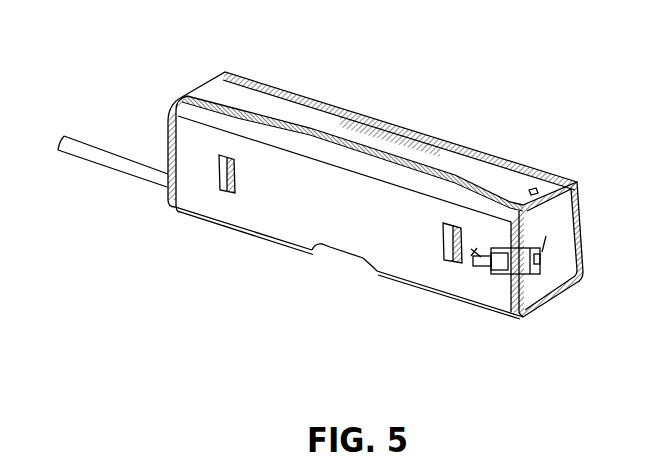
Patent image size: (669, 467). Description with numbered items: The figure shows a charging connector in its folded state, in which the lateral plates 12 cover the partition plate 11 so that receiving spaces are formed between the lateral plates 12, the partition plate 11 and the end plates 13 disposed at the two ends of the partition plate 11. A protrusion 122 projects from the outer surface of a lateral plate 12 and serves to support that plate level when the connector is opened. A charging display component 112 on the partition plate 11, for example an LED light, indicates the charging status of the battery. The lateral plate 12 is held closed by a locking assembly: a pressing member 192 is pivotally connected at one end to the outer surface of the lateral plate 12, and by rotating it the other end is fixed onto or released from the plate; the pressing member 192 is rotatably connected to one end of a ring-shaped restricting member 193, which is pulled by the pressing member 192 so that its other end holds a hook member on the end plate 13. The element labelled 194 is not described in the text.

The partition plate 11 is at (318, 105).
The charging display component 112 is at (533, 188).
The lateral plate 12 is at (342, 195).
The end plate 13 is at (557, 257).
The protrusion 122 is at (218, 190).
The pressing member 192 is at (483, 267).
The ring-shaped restricting member 193 is at (502, 274).
The terminal 194 is at (542, 252).